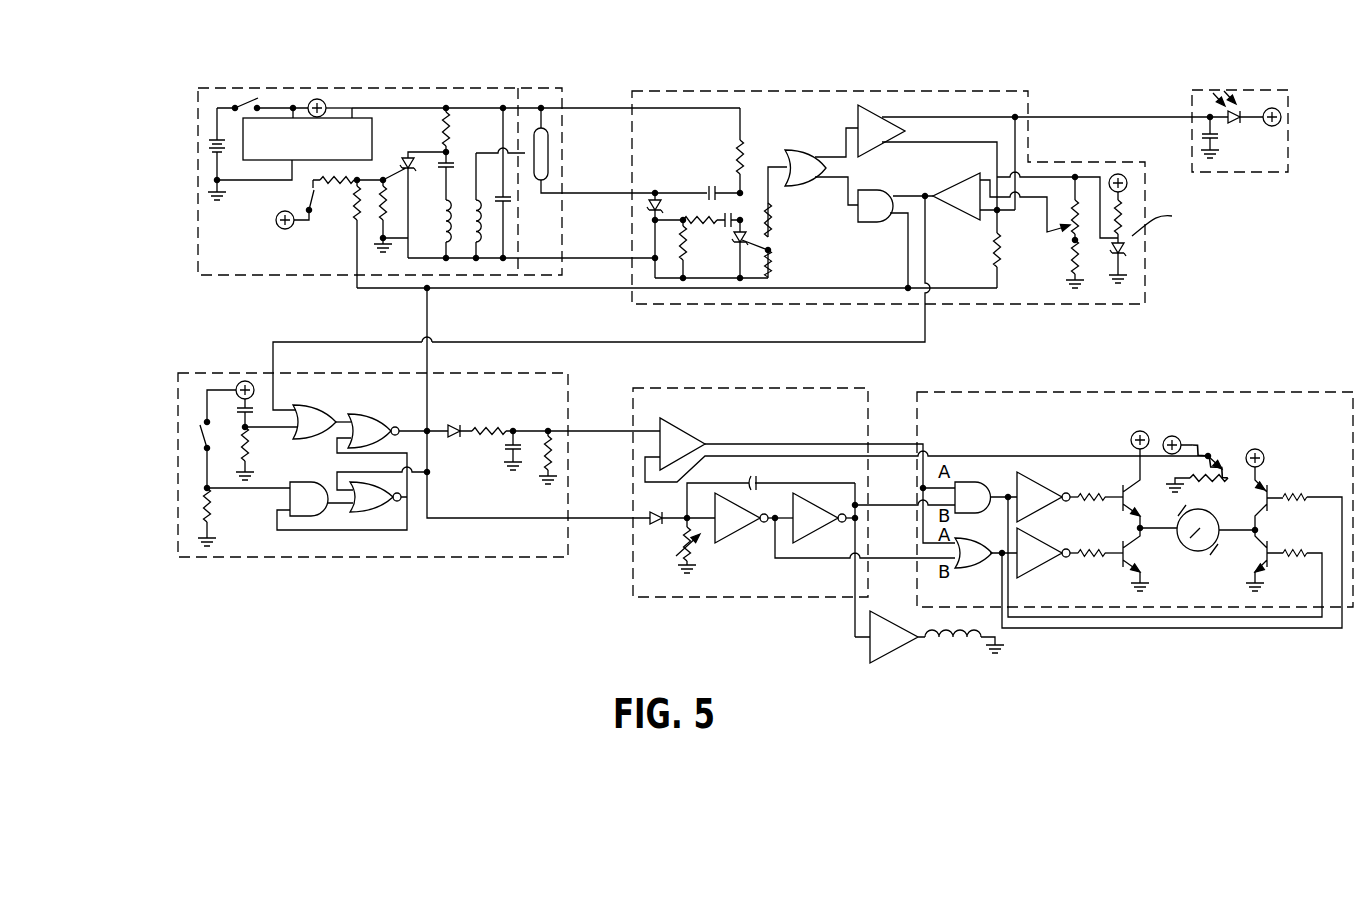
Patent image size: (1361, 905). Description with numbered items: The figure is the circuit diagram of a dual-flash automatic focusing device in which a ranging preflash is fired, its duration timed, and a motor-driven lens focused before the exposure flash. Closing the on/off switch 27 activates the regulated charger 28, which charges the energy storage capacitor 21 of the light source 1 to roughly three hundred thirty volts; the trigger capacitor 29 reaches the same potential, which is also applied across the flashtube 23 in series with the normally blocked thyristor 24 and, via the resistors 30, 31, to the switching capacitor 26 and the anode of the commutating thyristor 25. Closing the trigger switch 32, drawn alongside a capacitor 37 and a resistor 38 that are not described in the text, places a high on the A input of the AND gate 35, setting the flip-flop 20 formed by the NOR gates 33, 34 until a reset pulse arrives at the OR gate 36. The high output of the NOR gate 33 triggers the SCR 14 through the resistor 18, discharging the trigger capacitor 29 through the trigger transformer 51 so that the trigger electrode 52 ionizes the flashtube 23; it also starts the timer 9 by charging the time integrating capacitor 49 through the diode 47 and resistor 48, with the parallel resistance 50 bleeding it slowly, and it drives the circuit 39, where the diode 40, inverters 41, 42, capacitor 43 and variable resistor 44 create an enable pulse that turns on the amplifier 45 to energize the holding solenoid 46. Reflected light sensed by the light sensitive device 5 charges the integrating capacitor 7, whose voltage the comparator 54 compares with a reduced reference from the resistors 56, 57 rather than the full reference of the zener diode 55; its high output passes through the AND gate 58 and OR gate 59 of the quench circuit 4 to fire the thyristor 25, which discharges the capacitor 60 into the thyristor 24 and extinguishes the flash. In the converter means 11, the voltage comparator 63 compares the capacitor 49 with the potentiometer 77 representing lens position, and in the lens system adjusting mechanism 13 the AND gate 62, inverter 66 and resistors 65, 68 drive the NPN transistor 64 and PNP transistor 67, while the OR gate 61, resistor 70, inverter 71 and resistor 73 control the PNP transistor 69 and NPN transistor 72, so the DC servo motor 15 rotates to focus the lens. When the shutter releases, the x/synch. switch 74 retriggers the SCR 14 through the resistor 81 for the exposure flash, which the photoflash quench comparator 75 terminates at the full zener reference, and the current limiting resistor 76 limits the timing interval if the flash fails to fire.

The light source 1 is at (430, 82).
The quench circuit 4 is at (797, 84).
The light sensitive device 5 is at (1211, 84).
The integrating capacitor 7 is at (1201, 138).
The timer 9 is at (524, 371).
The converter means 11 is at (776, 378).
The lens system adjusting mechanism 13 is at (1100, 388).
The SCR 14 is at (400, 157).
The DC servo motor 15 is at (1181, 549).
The resistor 18 is at (353, 206).
The flip-flop 20 is at (323, 542).
The energy storage capacitor 21 is at (507, 213).
The flashtube 23 is at (548, 166).
The thyristor 24 is at (652, 208).
The commutating thyristor 25 is at (738, 247).
The switching capacitor 26 is at (717, 243).
The on/off switch 27 is at (248, 96).
The regulated charger 28 is at (339, 118).
The trigger capacitor 29 is at (456, 166).
The resistor 30 is at (718, 228).
The resistor 31 is at (740, 162).
The trigger switch 32 is at (199, 432).
The NOR gate 33 is at (383, 421).
The NOR gate 34 is at (374, 495).
The AND gate 35 is at (292, 494).
The OR gate 36 is at (313, 419).
The capacitor 37 is at (229, 401).
The resistor 38 is at (233, 447).
The circuit 39 is at (766, 570).
The diode 40 is at (659, 525).
The inverter 41 is at (754, 518).
The inverter 42 is at (824, 518).
The capacitor 43 is at (758, 484).
The variable resistor 44 is at (680, 556).
The amplifier 45 is at (890, 637).
The holding solenoid 46 is at (965, 650).
The diode 47 is at (443, 428).
The resistor 48 is at (488, 428).
The time integrating capacitor 49 is at (512, 448).
The parallel resistance 50 is at (540, 456).
The trigger transformer 51 is at (453, 186).
The trigger electrode 52 is at (522, 126).
The comparator 54 is at (975, 184).
The zener diode 55 is at (1128, 256).
The resistor 56 is at (1068, 222).
The resistor 57 is at (1068, 254).
The AND gate 58 is at (884, 229).
The OR gate 59 is at (821, 166).
The capacitor 60 is at (711, 194).
The OR gate 61 is at (1148, 562).
The AND gate 62 is at (1138, 549).
The voltage comparator 63 is at (682, 423).
The NPN transistor 64 is at (1262, 571).
The resistor 65 is at (1295, 554).
The inverter 66 is at (1047, 497).
The PNP transistor 67 is at (1133, 493).
The resistor 68 is at (1080, 490).
The PNP transistor 69 is at (1262, 499).
The resistor 70 is at (1300, 491).
The inverter 71 is at (1047, 553).
The NPN transistor 72 is at (1142, 561).
The resistor 73 is at (1090, 560).
The x/synch. switch 74 is at (306, 192).
The photoflash quench comparator 75 is at (880, 120).
The current limiting resistor 76 is at (995, 250).
The potentiometer 77 is at (1205, 438).
The resistor 81 is at (350, 200).